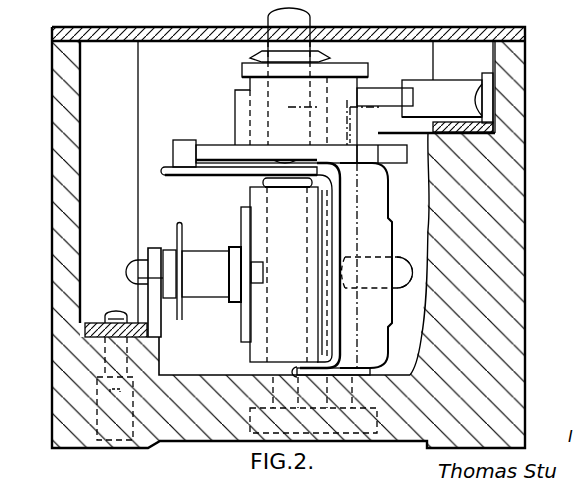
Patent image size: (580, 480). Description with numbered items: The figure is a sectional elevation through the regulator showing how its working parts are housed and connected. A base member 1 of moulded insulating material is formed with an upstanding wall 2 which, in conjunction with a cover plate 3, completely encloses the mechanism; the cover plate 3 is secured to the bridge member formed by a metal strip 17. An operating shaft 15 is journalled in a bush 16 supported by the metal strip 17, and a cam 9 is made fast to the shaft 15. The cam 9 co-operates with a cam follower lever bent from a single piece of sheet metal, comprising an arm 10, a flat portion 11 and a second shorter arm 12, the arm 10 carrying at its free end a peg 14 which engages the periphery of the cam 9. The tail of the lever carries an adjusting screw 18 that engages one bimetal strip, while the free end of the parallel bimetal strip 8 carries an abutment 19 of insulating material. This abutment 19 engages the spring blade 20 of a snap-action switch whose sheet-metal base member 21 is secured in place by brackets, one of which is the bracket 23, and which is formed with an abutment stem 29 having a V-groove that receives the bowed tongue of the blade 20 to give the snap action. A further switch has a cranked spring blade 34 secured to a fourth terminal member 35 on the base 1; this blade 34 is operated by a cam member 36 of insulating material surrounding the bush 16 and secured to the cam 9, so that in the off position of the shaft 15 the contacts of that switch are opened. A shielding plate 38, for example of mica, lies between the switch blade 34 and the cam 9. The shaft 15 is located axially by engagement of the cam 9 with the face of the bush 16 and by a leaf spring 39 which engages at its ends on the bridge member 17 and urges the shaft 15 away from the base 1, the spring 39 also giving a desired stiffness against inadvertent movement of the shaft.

The base member 1 is at (190, 433).
The upstanding wall 2 is at (54, 163).
The cover plate 3 is at (523, 36).
The bimetal strip 8 is at (243, 345).
The cam 9 is at (220, 145).
The cam follower lever arm 10 is at (168, 170).
The flat portion 11 is at (380, 302).
The second shorter arm 12 is at (356, 442).
The peg 14 is at (185, 141).
The operating shaft 15 is at (311, 20).
The bush 16 is at (246, 82).
The metal strip 17 is at (242, 67).
The adjusting screw 18 is at (410, 270).
The abutment 19 is at (220, 286).
The spring blade 20 is at (180, 223).
The switch base member 21 is at (155, 296).
The bracket 23 is at (86, 330).
The abutment stem 29 is at (170, 252).
The spring blade 34 is at (461, 90).
The fourth terminal member 35 is at (490, 130).
The cam member 36 is at (383, 96).
The shielding plate 38 is at (417, 137).
The leaf spring 39 is at (262, 52).